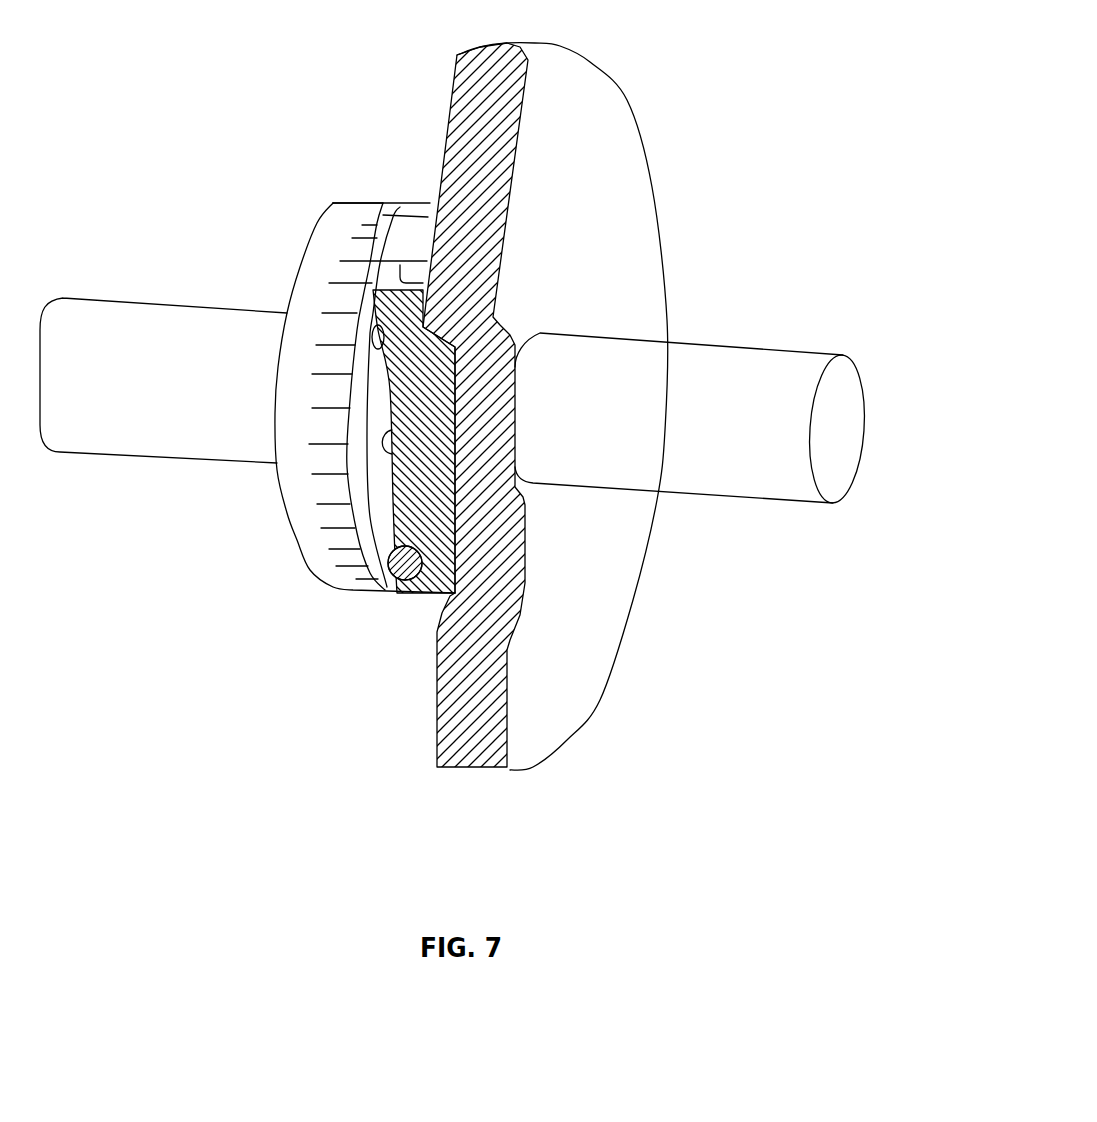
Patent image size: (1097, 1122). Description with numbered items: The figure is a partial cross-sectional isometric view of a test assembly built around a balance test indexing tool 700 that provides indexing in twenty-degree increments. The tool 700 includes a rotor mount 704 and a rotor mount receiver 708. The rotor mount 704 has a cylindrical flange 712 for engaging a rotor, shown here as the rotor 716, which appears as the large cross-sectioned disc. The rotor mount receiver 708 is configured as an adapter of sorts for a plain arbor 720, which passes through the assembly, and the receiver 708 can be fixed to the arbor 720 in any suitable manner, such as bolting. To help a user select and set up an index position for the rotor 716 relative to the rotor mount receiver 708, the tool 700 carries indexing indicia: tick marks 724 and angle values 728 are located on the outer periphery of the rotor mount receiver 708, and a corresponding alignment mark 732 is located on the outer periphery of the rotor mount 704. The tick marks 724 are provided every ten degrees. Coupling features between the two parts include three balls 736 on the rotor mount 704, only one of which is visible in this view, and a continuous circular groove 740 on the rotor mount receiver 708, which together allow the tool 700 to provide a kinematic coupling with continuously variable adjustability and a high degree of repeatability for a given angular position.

The balance test indexing tool 700 is at (318, 605).
The rotor mount 704 is at (427, 597).
The rotor mount receiver 708 is at (280, 503).
The cylindrical flange 712 is at (453, 510).
The rotor 716 is at (627, 100).
The plain arbor 720 is at (175, 303).
The tick marks 724 is at (377, 222).
The angle values 728 is at (334, 214).
The alignment mark 732 is at (375, 288).
The balls 736 is at (330, 270).
The continuous circular groove 740 is at (317, 542).